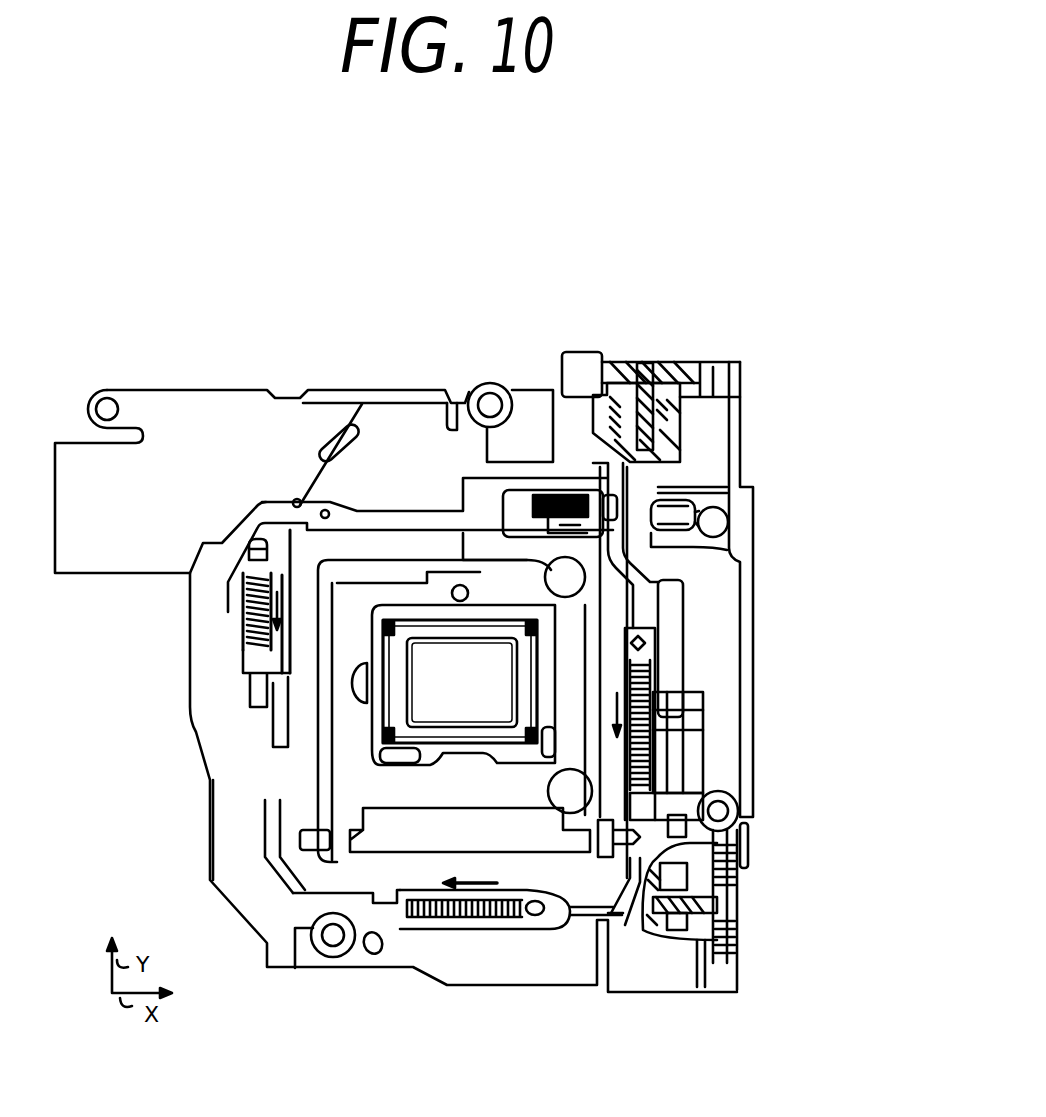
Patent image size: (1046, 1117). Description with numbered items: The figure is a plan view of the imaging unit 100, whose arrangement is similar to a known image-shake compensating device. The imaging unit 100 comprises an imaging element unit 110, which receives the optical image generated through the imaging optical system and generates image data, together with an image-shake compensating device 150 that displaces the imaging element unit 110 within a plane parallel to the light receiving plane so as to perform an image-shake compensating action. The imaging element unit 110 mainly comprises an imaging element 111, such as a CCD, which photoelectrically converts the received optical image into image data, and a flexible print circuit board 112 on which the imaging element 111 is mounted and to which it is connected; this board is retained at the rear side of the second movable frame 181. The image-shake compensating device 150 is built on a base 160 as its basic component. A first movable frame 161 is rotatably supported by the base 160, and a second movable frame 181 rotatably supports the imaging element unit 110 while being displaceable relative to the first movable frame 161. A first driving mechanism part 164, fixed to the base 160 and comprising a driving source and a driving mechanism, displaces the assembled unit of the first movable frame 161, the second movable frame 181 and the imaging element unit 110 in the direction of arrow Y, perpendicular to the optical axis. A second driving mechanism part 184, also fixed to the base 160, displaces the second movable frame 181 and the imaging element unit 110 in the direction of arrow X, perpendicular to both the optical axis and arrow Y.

The imaging unit 100 is at (376, 302).
The imaging element unit 110 is at (440, 668).
The imaging element 111 is at (425, 702).
The flexible print circuit board 112 is at (173, 417).
The image-shake compensating device 150 is at (765, 541).
The base 160 is at (282, 953).
The first movable frame 161 is at (313, 871).
The first driving mechanism part 164 is at (692, 352).
The second movable frame 181 is at (350, 778).
The second driving mechanism part 184 is at (750, 898).